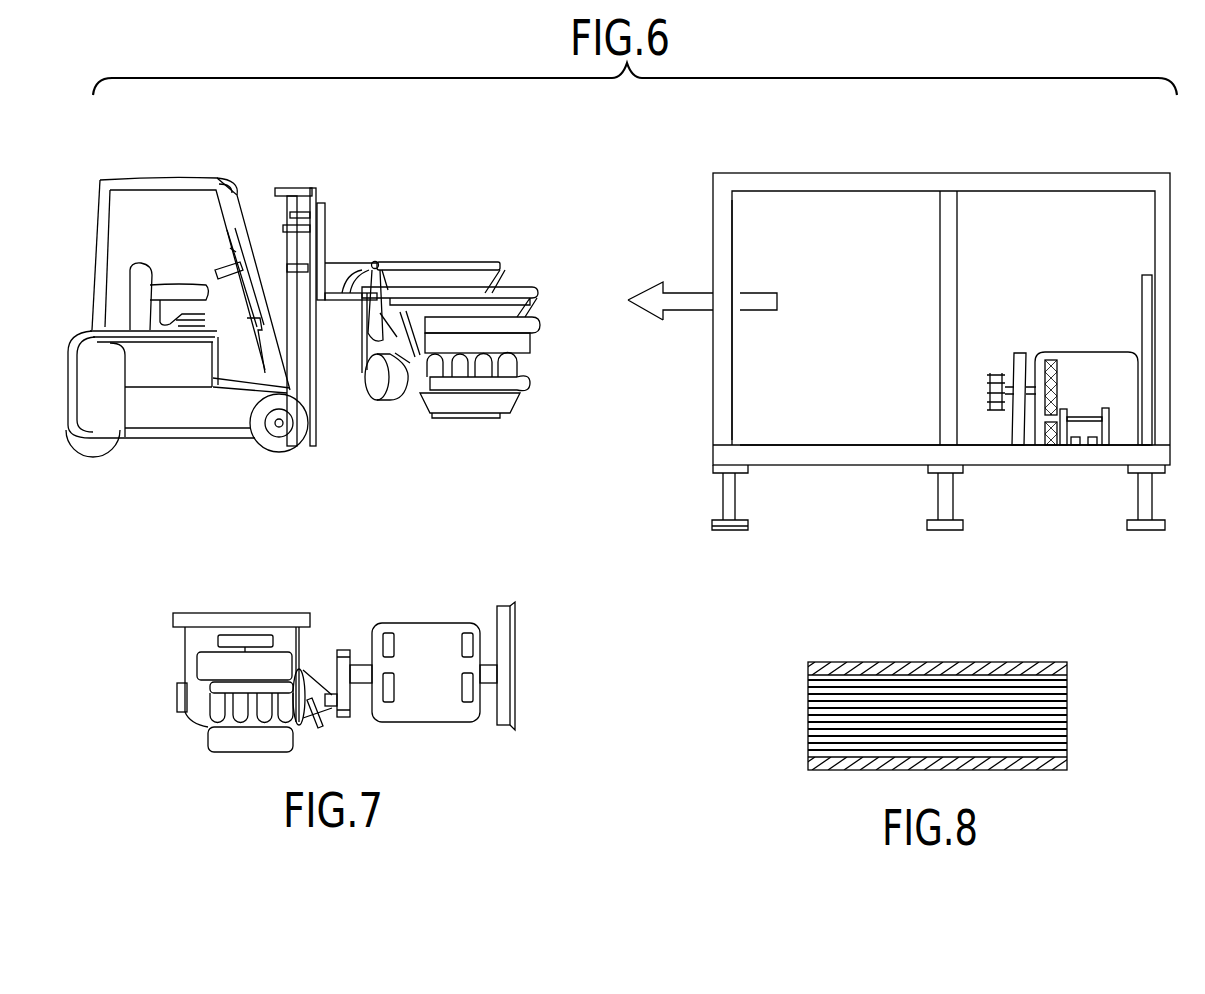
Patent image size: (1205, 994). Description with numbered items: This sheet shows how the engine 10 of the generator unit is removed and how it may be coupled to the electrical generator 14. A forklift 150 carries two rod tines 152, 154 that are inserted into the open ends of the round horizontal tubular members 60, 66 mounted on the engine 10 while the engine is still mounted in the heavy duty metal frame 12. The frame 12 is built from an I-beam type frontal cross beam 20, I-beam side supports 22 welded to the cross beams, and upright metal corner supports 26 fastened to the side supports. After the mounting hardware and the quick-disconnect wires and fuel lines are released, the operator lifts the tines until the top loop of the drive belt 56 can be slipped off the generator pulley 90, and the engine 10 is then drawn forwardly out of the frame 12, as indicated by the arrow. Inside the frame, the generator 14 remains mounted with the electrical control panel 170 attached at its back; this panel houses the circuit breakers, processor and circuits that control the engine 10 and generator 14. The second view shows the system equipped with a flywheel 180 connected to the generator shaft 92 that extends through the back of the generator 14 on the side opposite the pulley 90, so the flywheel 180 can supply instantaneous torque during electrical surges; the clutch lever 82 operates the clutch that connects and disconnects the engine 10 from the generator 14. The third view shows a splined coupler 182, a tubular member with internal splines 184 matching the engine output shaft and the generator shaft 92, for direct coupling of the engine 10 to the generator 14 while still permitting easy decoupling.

In FIG. 6, the forklift 150 is at (184, 157).
In FIG. 6, the rod tine 152 is at (337, 260).
In FIG. 6, the rod tine 154 is at (352, 267).
In FIG. 6, the horizontal tubular member 66 is at (475, 263).
In FIG. 6, the horizontal tubular member 60 is at (517, 290).
In FIG. 7, the horizontal tubular member 60 is at (288, 620).
In FIG. 6, the internal combustion engine 10 is at (530, 344).
In FIG. 7, the internal combustion engine 10 is at (182, 734).
In FIG. 6, the heavy duty metal frame 12 is at (907, 156).
In FIG. 6, the upright metal corner support 26 is at (733, 378).
In FIG. 6, the I-beam side support 22 is at (765, 452).
In FIG. 6, the frontal cross beam 20 is at (724, 531).
In FIG. 6, the electrical control panel 170 is at (1142, 283).
In FIG. 6, the flywheel 180 is at (1017, 353).
In FIG. 7, the flywheel 180 is at (505, 606).
In FIG. 6, the generator pulley 90 is at (987, 383).
In FIG. 7, the generator pulley 90 is at (351, 665).
In FIG. 6, the electrical generator 14 is at (1079, 352).
In FIG. 7, the electrical generator 14 is at (422, 623).
In FIG. 7, the drive belt 56 is at (341, 650).
In FIG. 7, the generator shaft 92 is at (486, 665).
In FIG. 7, the clutch lever 82 is at (318, 725).
In FIG. 8, the splined coupler 182 is at (829, 662).
In FIG. 8, the internal splines 184 is at (1058, 711).